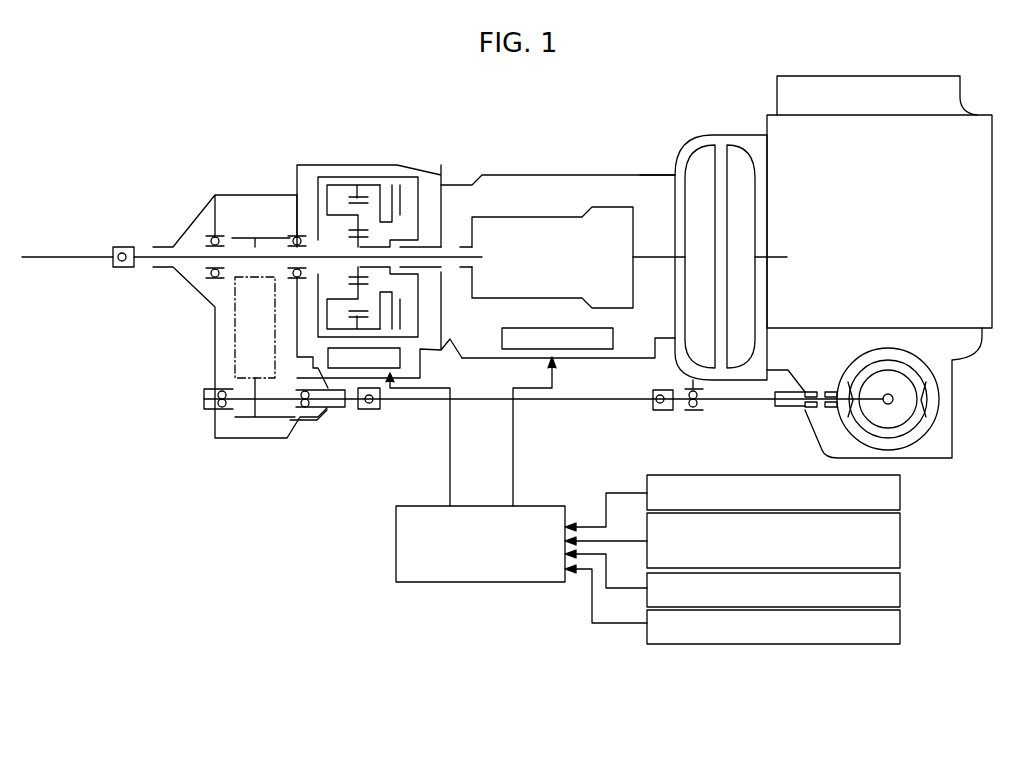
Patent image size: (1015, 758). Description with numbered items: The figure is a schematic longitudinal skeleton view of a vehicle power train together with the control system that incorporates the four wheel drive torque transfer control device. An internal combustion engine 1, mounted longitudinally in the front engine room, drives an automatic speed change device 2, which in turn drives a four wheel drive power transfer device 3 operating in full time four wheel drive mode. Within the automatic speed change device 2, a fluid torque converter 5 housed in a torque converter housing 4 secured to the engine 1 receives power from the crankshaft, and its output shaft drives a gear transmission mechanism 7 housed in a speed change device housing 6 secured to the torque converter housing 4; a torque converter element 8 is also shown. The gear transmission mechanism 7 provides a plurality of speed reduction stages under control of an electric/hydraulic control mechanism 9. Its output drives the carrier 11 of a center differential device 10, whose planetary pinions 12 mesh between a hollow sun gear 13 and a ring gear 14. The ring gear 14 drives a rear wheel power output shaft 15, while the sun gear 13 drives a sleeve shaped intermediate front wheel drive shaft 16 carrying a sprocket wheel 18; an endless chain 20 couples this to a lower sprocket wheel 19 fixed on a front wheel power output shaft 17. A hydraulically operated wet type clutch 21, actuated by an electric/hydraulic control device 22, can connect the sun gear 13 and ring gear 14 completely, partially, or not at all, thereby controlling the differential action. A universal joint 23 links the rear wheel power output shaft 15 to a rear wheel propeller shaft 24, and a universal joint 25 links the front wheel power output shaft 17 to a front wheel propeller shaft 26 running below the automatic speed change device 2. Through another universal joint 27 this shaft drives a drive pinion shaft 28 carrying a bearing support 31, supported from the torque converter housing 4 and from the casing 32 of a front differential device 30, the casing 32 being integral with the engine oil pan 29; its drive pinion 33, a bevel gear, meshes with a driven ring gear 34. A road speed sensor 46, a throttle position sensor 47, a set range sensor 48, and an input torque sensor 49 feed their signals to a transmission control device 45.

The internal combustion engine 1 is at (874, 165).
The automatic speed change device 2 is at (580, 170).
The four wheel drive power transfer device 3 is at (378, 158).
The torque converter housing 4 is at (742, 135).
The fluid torque converter 5 is at (738, 198).
The speed change device housing 6 is at (653, 175).
The gear transmission mechanism 7 is at (494, 280).
The pump impeller 8 is at (735, 233).
The electric/hydraulic control mechanism 9 is at (567, 343).
The center differential device 10 is at (368, 188).
The carrier 11 is at (336, 240).
The planetary pinions 12 is at (348, 210).
The sun gear 13 is at (366, 236).
The ring gear 14 is at (352, 196).
The rear wheel power output shaft 15 is at (143, 257).
The intermediate front wheel drive shaft 16 is at (233, 238).
The front wheel power output shaft 17 is at (290, 412).
The sprocket wheel 18 is at (270, 238).
The sprocket wheel 19 is at (240, 420).
The endless chain 20 is at (225, 350).
The wet type clutch 21 is at (394, 212).
The electric/hydraulic control device 22 is at (374, 362).
The universal joint 23 is at (120, 268).
The rear wheel propeller shaft 24 is at (50, 257).
The universal joint 25 is at (369, 410).
The front wheel propeller shaft 26 is at (601, 403).
The universal joint 27 is at (660, 410).
The drive pinion shaft 28 is at (737, 403).
The oil pan 29 is at (952, 415).
The front differential device 30 is at (920, 420).
The coupling 31 is at (808, 410).
The casing 32 is at (815, 390).
The drive pinion 33 is at (850, 386).
The driven ring gear 34 is at (922, 388).
The transmission control device 45 is at (396, 547).
The road speed sensor 46 is at (903, 493).
The throttle position sensor 47 is at (903, 541).
The set range sensor 48 is at (903, 590).
The input torque sensor 49 is at (903, 628).